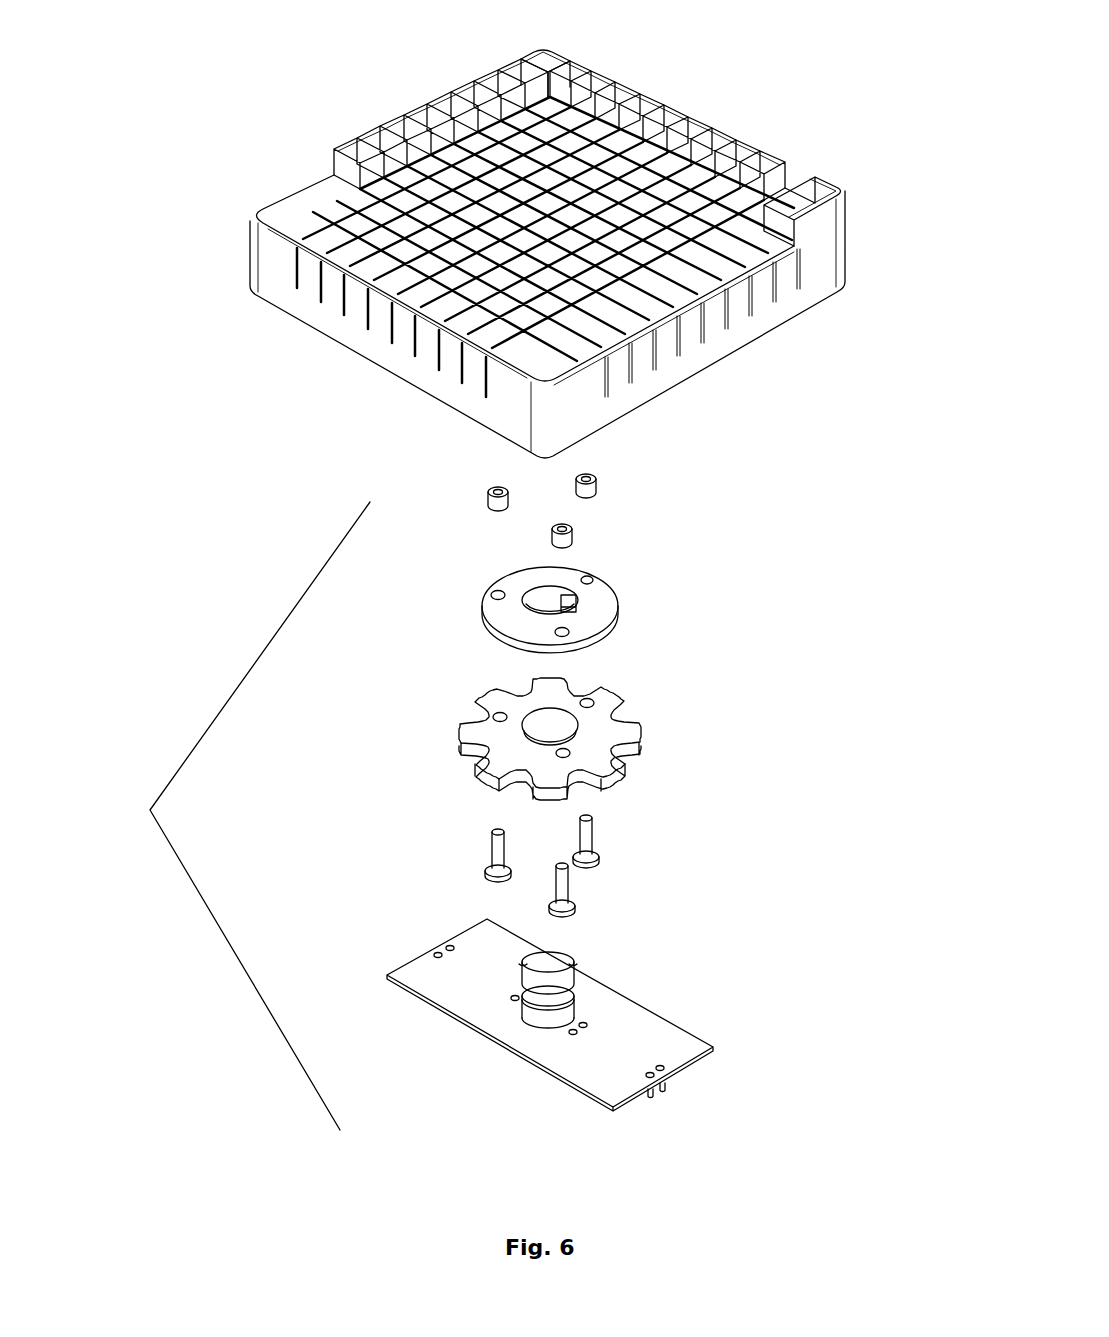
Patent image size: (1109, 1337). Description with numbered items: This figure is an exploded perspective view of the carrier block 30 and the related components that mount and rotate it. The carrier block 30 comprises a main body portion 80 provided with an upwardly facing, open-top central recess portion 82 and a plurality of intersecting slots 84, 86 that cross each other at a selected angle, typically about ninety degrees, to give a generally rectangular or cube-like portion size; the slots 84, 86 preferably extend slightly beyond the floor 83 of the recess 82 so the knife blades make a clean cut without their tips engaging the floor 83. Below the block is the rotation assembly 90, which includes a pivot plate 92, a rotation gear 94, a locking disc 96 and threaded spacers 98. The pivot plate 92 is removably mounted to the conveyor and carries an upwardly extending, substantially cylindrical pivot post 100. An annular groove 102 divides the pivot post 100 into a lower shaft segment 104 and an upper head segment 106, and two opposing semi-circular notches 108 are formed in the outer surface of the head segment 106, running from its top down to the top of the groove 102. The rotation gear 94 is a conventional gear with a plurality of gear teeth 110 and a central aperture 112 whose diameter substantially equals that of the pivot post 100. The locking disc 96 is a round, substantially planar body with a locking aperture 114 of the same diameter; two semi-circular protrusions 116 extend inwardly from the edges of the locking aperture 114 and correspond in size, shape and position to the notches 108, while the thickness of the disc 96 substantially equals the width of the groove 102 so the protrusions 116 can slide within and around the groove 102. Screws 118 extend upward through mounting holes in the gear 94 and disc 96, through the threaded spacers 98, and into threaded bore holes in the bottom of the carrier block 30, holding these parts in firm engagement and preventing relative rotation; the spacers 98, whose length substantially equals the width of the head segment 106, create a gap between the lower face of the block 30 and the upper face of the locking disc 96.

The carrier block 30 is at (808, 98).
The main body portion 80 is at (820, 272).
The central recess portion 82 is at (412, 123).
The floor of the recess 83 is at (433, 217).
The slots 84 is at (416, 360).
The slots 86 is at (727, 330).
The rotation assembly 90 is at (150, 810).
The pivot plate 92 is at (667, 1041).
The rotation gear 94 is at (547, 761).
The locking disc 96 is at (556, 612).
The threaded spacers 98 is at (553, 540).
The pivot post 100 is at (573, 1007).
The annular groove 102 is at (543, 990).
The lower shaft segment 104 is at (547, 1017).
The upper head segment 106 is at (555, 962).
The semi-circular notches 108 is at (525, 968).
The gear teeth 110 is at (473, 760).
The central aperture 112 is at (633, 743).
The locking aperture 114 is at (576, 607).
The semi-circular protrusions 116 is at (566, 597).
The screws 118 is at (560, 895).